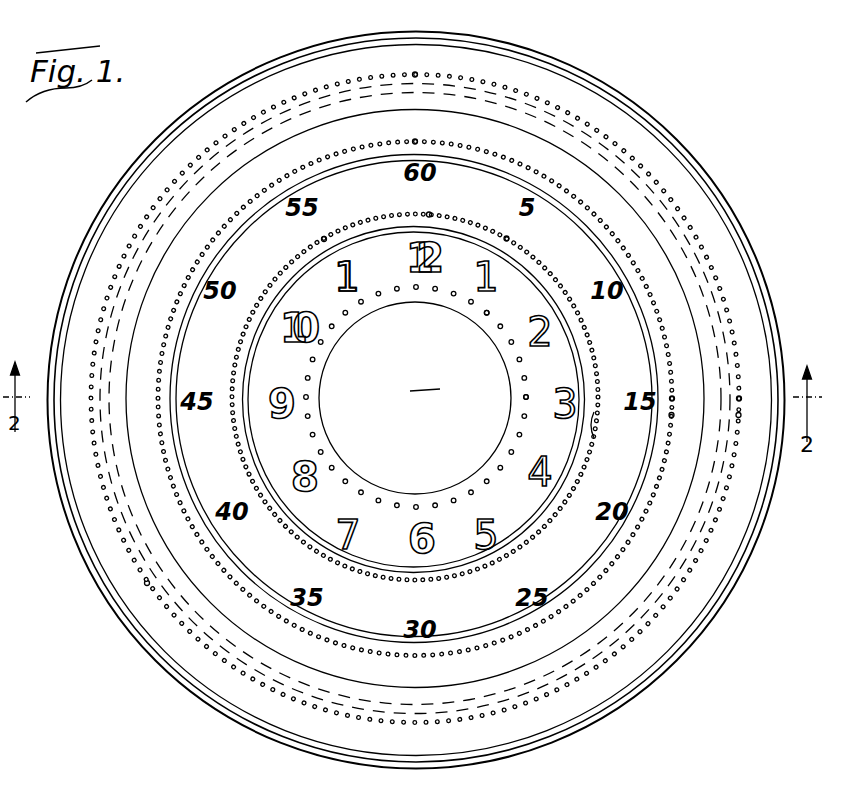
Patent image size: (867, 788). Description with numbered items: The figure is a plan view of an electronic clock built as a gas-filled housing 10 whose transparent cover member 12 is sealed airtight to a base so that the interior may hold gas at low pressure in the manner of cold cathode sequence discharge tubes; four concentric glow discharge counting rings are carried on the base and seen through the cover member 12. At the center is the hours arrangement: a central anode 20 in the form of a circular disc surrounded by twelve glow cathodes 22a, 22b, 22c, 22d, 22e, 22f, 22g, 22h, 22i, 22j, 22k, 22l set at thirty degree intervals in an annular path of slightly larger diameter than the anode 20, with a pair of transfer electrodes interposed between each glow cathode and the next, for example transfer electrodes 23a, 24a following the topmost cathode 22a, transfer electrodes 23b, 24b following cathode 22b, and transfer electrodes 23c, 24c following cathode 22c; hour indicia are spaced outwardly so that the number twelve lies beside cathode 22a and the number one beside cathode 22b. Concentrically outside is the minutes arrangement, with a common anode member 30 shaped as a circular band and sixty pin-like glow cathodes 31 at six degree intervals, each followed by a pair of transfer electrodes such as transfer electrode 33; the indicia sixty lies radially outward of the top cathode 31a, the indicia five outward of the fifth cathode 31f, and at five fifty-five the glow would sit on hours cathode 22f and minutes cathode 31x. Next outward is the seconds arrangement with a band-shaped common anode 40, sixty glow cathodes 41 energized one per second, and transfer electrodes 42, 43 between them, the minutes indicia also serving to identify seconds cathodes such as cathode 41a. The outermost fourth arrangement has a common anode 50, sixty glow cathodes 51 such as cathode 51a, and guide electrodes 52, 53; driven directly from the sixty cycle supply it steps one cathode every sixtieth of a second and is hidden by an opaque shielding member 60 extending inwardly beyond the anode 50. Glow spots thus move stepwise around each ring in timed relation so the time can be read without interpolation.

The housing 10 is at (116, 170).
The transparent cover member 12 is at (147, 584).
The central anode 20 is at (424, 424).
The glow cathode 22a is at (416, 290).
The glow cathode 22b is at (474, 302).
The glow cathode 22c is at (510, 345).
The glow cathode 22d is at (524, 399).
The glow cathode 22e is at (509, 452).
The glow cathode 22f is at (470, 490).
The glow cathode 22g is at (416, 504).
The glow cathode 22h is at (380, 477).
The glow cathode 22i is at (323, 451).
The glow cathode 22j is at (309, 397).
The glow cathode 22k is at (323, 344).
The glow cathode 22l is at (362, 304).
The transfer electrode 23a is at (435, 291).
The transfer electrode 23b is at (485, 315).
The transfer electrode 23c is at (522, 360).
The transfer electrode 24a is at (453, 296).
The transfer electrode 24b is at (499, 329).
The transfer electrode 24c is at (522, 380).
The common anode member 30 is at (528, 270).
The glow cathodes 31 is at (600, 394).
The glow cathode 31a is at (430, 213).
The glow cathode 31f is at (509, 240).
The glow cathode 31x is at (322, 236).
The transfer electrode 33 is at (592, 425).
The common anode 40 is at (642, 326).
The glow cathodes 41 is at (674, 380).
The glow cathode 41a is at (417, 140).
The transfer electrode 42 is at (674, 399).
The transfer electrode 43 is at (674, 416).
The common anode 50 is at (258, 143).
The glow cathodes 51 is at (740, 380).
The glow cathode 51a is at (414, 72).
The guide electrode 52 is at (741, 399).
The guide electrode 53 is at (741, 416).
The opaque shielding member 60 is at (655, 637).